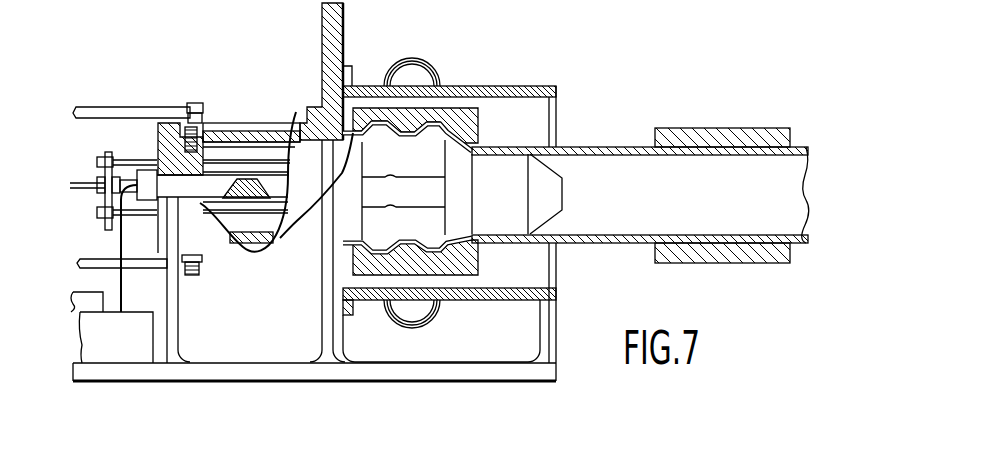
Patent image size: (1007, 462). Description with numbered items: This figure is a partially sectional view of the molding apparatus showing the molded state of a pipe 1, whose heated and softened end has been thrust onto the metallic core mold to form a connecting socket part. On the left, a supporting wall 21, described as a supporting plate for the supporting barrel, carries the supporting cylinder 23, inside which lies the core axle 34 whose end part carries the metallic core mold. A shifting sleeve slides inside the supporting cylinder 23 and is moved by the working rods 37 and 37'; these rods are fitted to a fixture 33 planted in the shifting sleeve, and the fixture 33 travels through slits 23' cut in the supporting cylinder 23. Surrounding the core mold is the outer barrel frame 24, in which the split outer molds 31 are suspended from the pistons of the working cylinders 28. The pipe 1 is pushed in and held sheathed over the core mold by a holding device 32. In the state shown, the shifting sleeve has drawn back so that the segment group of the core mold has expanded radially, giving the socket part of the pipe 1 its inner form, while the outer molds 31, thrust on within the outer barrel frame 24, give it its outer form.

The pipe 1 is at (607, 150).
The supporting wall 21 is at (322, 27).
The supporting cylinder 23 is at (160, 243).
The slits 23' is at (251, 113).
The outer barrel frame 24 is at (501, 86).
The working cylinders 28 is at (413, 73).
The outer molds 31 is at (478, 122).
The holding device 32 is at (708, 128).
The fixture 33 is at (207, 127).
The core axle 34 is at (203, 193).
The working rod 37 is at (131, 95).
The working rod 37' is at (106, 246).